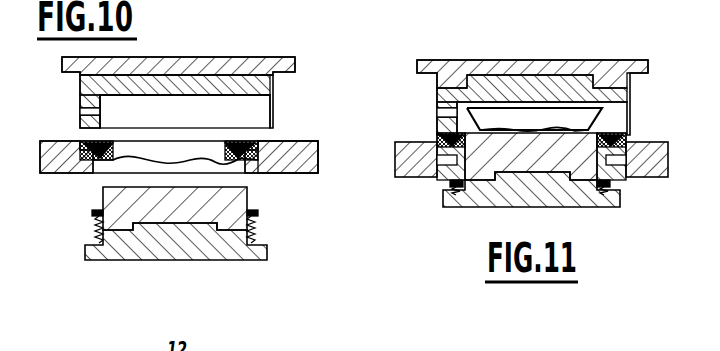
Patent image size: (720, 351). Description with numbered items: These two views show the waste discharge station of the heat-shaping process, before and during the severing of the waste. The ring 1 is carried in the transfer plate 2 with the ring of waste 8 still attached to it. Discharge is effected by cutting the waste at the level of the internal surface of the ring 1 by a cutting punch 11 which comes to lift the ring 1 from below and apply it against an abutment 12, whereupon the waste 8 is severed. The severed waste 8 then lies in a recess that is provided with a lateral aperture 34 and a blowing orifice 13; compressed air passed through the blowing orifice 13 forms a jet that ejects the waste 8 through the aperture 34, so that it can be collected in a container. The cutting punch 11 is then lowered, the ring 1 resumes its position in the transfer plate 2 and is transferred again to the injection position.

In FIG. 10, the ring 1 is at (270, 140).
In FIG. 11, the ring 1 is at (627, 140).
In FIG. 10, the transfer plate 2 is at (298, 163).
In FIG. 11, the transfer plate 2 is at (660, 170).
In FIG. 10, the waste 8 is at (127, 150).
In FIG. 11, the waste 8 is at (597, 113).
In FIG. 10, the cutting punch 11 is at (207, 213).
In FIG. 11, the cutting punch 11 is at (583, 158).
In FIG. 10, the abutment 12 is at (95, 84).
In FIG. 11, the abutment 12 is at (498, 82).
In FIG. 10, the blowing orifice 13 is at (97, 108).
In FIG. 11, the blowing orifice 13 is at (425, 113).
In FIG. 10, the lateral aperture 34 is at (259, 116).